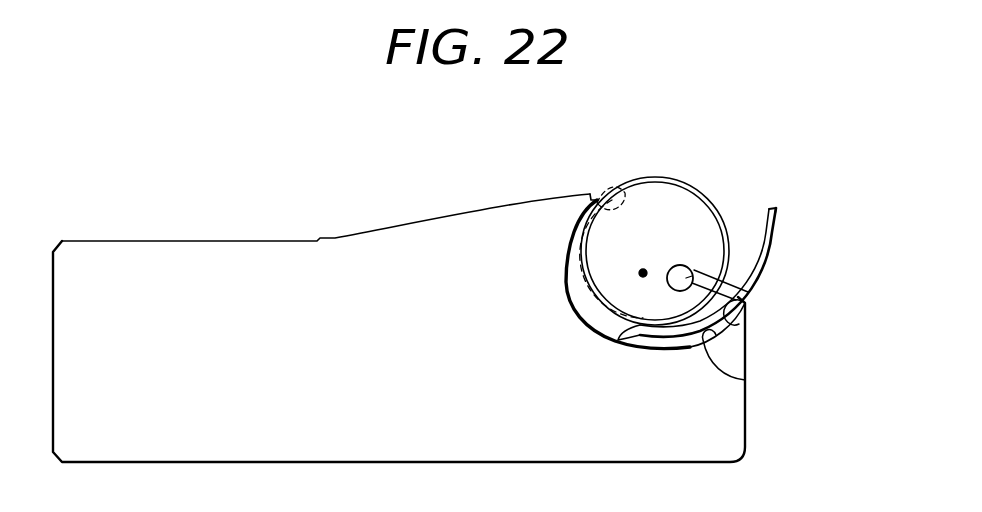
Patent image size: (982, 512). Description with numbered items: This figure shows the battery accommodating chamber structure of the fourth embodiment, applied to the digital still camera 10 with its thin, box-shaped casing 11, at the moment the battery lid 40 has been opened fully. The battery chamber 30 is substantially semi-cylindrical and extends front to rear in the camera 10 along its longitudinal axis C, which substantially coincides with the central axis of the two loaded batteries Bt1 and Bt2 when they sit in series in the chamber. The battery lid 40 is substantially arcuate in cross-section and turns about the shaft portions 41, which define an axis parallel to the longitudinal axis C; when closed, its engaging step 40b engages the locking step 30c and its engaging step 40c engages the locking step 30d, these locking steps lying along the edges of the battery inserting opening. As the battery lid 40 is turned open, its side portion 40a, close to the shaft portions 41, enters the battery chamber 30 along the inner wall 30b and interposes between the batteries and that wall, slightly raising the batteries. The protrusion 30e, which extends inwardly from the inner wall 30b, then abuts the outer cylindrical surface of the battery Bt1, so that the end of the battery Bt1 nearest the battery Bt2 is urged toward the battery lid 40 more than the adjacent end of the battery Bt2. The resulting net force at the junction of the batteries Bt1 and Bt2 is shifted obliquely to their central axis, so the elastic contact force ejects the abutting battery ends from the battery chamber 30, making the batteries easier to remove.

The digital still camera 10 is at (132, 140).
The casing 11 is at (226, 252).
The battery chamber 30 is at (584, 311).
The inner wall 30b is at (745, 378).
The locking step 30c is at (595, 201).
The locking step 30d is at (733, 327).
The protrusion 30e is at (622, 205).
The battery lid 40 is at (776, 241).
The side portion 40a is at (673, 340).
The engaging step 40b is at (773, 203).
The engaging step 40c is at (660, 327).
The shaft portion 41 is at (693, 268).
The battery Bt1 is at (677, 182).
The battery Bt2 is at (708, 210).
The longitudinal axis C is at (645, 275).